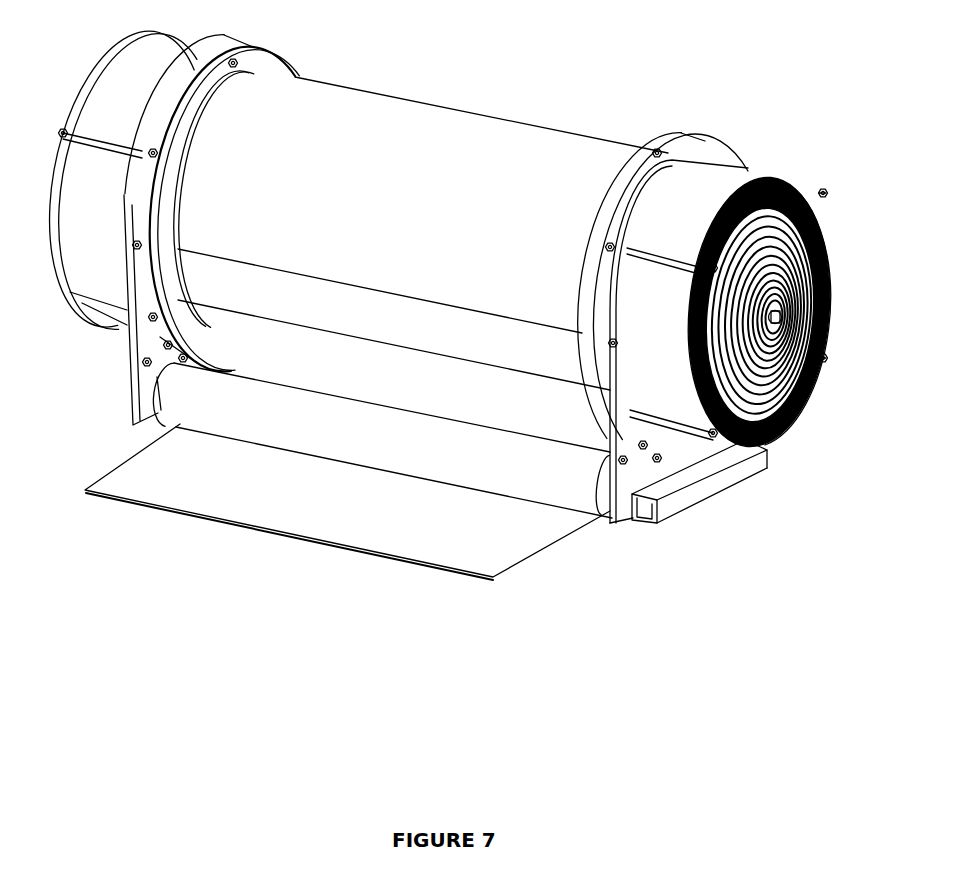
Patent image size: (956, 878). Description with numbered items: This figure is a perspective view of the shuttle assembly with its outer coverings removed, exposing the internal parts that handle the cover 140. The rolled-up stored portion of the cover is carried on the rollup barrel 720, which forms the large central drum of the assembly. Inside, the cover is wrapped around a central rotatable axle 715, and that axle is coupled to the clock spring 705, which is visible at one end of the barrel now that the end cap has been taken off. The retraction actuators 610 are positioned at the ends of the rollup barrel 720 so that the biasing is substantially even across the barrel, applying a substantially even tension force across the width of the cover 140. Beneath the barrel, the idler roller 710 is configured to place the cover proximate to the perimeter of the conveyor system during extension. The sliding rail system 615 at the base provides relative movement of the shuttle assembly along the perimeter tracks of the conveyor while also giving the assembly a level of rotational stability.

The retraction actuator 610 is at (73, 90).
The rollup barrel 720 is at (305, 97).
The idler roller 710 is at (558, 482).
The cover 140 is at (463, 530).
The sliding rail system 615 is at (712, 498).
The clock spring 705 is at (783, 408).
The central rotatable axle 715 is at (813, 358).